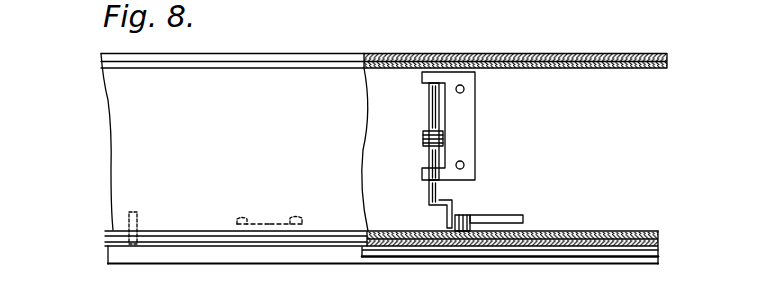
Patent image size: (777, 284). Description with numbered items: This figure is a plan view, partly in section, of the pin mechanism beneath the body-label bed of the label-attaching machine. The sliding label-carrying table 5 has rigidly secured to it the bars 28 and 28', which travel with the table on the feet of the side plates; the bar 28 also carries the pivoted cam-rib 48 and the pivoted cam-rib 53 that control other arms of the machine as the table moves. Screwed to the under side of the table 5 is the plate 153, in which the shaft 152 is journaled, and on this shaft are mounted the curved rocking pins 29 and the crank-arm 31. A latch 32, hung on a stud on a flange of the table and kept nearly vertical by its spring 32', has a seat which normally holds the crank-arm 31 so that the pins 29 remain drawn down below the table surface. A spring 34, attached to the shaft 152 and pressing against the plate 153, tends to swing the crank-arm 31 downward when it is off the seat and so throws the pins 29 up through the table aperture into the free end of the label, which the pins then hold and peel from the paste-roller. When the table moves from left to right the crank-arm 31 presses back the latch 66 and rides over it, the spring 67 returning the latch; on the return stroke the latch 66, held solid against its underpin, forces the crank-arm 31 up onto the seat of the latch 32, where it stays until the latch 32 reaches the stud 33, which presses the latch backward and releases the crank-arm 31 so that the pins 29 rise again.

The label-carrying table 5 is at (592, 224).
The bar 28 is at (682, 221).
The bar 28' is at (693, 54).
The curved rocking pins 29 is at (427, 157).
The crank-arm 31 is at (453, 210).
The latch 32 is at (509, 200).
The spring 32' is at (544, 211).
The stud 33 is at (127, 221).
The spring 34 is at (427, 122).
The cam-rib 48 is at (653, 261).
The cam-rib 53 is at (653, 251).
The latch 66 is at (300, 227).
The spring 67 is at (257, 227).
The shaft 152 is at (430, 192).
The plate 153 is at (467, 123).